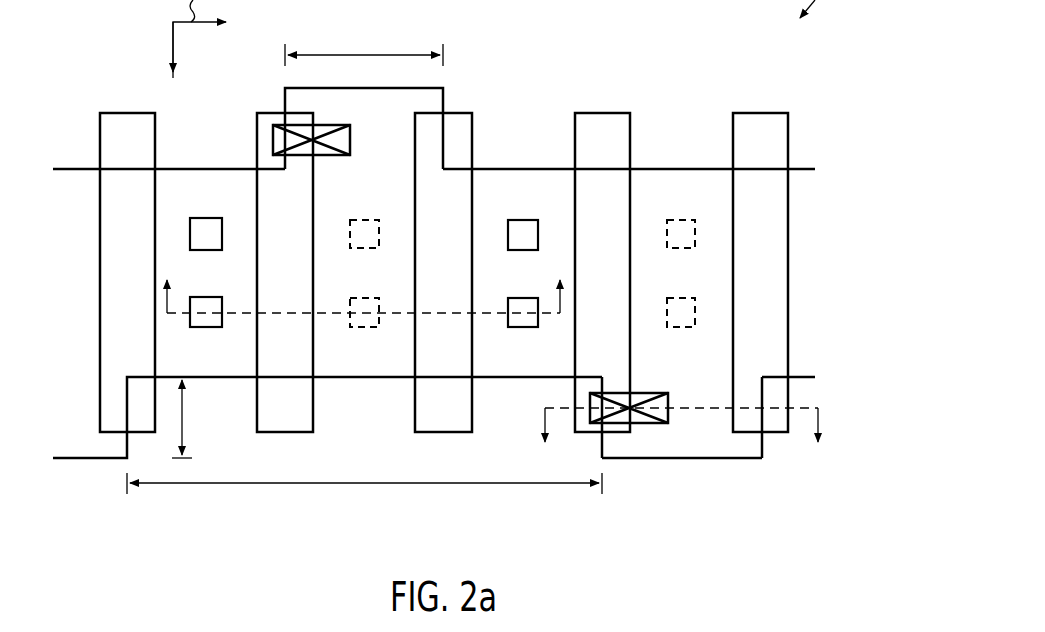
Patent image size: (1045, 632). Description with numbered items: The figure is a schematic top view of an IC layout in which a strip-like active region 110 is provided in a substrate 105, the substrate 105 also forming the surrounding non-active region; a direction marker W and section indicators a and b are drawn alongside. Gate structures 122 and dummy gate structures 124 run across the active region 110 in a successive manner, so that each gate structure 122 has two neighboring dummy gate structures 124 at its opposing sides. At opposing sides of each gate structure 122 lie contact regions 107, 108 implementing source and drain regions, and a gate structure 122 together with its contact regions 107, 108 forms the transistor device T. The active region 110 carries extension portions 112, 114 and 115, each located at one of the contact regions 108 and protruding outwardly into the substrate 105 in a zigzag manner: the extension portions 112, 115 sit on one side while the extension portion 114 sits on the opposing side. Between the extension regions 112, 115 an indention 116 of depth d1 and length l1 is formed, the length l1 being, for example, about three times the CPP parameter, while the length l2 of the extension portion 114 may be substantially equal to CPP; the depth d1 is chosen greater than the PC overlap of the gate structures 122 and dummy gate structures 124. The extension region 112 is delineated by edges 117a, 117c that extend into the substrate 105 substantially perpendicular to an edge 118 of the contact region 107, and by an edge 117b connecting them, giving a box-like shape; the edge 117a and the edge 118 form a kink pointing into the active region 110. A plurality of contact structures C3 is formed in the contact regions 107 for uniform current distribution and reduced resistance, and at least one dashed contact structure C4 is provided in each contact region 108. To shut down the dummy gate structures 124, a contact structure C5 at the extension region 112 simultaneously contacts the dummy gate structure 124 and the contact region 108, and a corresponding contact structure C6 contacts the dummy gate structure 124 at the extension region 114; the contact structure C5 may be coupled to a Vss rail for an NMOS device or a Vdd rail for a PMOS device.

The substrate 105 is at (695, 47).
The contact region 107 is at (225, 287).
The contact region 108 is at (383, 287).
The active region 110 is at (520, 169).
The extension portion 112 is at (718, 449).
The extension portion 114 is at (403, 127).
The extension portion 115 is at (80, 448).
The indention 116 is at (383, 419).
The edge 117a is at (763, 445).
The edge 117b is at (735, 460).
The edge 117c is at (602, 445).
The edge 118 is at (815, 377).
The gate structure 122 is at (148, 153).
The dummy gate structure 124 is at (303, 419).
The contact structure C3 is at (196, 218).
The contact structure C4 is at (356, 220).
The contact structure C5 is at (668, 395).
The contact structure C6 is at (350, 145).
The transistor device T is at (759, 108).
The width direction axes W is at (173, 41).
The length of the indention l1 is at (316, 484).
The length of the extension portion l2 is at (366, 55).
The depth of the indention d1 is at (187, 420).
The section line a- a is at (682, 444).
The section line b- b is at (366, 278).